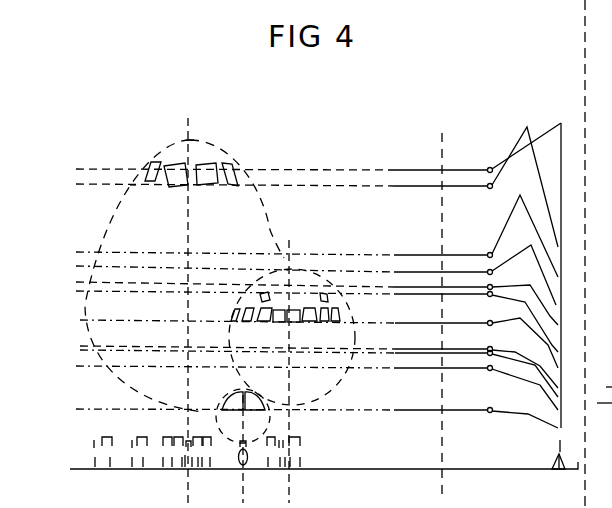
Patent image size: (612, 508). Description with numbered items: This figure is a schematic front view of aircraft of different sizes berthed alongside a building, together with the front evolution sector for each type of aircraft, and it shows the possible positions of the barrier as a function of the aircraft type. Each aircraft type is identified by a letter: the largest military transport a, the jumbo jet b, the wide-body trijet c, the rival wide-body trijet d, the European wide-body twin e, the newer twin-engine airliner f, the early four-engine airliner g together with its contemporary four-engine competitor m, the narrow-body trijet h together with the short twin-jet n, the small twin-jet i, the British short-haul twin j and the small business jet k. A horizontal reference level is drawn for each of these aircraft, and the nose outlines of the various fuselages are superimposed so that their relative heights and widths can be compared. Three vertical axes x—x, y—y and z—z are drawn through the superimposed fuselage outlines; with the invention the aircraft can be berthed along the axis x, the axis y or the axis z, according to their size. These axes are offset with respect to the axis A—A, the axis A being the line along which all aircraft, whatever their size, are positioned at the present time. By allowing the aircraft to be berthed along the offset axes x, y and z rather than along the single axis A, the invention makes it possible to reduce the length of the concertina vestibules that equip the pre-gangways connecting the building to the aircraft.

The C 5 A aircraft a is at (312, 148).
The 747 aircraft b is at (311, 187).
The DC 10 aircraft c is at (311, 236).
The L 1011 aircraft d is at (310, 275).
The A3B aircraft e is at (311, 298).
The 767 aircraft f is at (311, 317).
The 707 aircraft g is at (311, 339).
The DC 8 aircraft m is at (79, 314).
The 727 aircraft h is at (311, 362).
The DC 9 aircraft n is at (77, 341).
The 737 aircraft i is at (311, 371).
The BAC 111 aircraft j is at (310, 384).
The Learjet aircraft k is at (311, 414).
The berthing axis x— x is at (192, 93).
The berthing axis y— y is at (240, 377).
The berthing axis z— z is at (292, 229).
The present positioning axis A— A is at (449, 316).